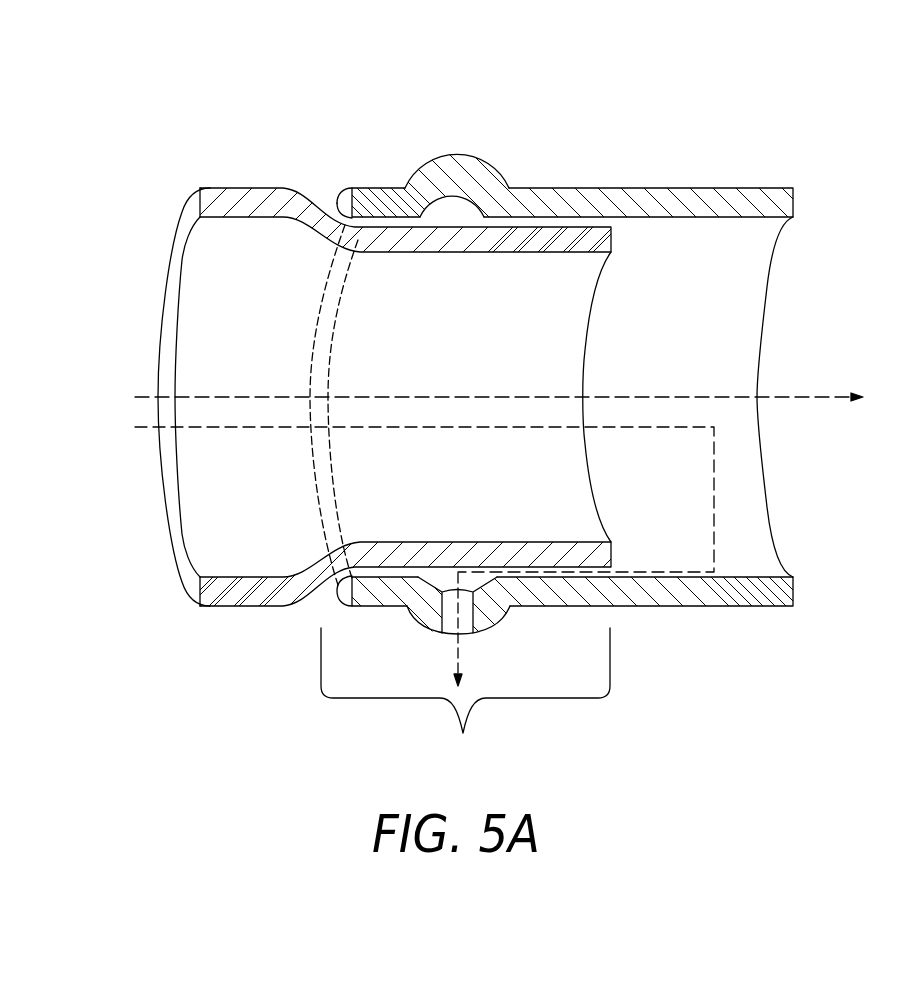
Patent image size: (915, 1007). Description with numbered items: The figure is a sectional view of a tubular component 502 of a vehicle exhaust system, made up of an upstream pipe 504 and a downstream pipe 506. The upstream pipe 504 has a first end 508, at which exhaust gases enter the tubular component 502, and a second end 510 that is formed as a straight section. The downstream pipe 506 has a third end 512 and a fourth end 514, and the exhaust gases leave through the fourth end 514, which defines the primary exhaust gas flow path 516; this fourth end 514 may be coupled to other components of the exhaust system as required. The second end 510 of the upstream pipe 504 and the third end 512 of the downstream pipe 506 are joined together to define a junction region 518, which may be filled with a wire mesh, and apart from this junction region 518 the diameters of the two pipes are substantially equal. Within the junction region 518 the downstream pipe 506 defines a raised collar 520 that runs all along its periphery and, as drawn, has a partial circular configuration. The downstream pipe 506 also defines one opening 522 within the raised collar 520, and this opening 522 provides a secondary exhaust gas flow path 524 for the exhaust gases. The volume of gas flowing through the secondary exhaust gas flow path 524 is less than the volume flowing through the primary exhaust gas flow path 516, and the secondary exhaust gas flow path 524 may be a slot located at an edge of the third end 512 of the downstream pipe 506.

The tubular component 502 is at (260, 131).
The upstream pipe 504 is at (270, 606).
The downstream pipe 506 is at (625, 613).
The first end 508 is at (162, 487).
The second end 510 is at (589, 481).
The third end 512 is at (333, 189).
The fourth end 514 is at (769, 272).
The primary exhaust gas flow path 516 is at (811, 397).
The junction region 518 is at (465, 699).
The raised collar 520 is at (458, 156).
The opening 522 is at (468, 614).
The secondary exhaust gas flow path 524 is at (458, 648).